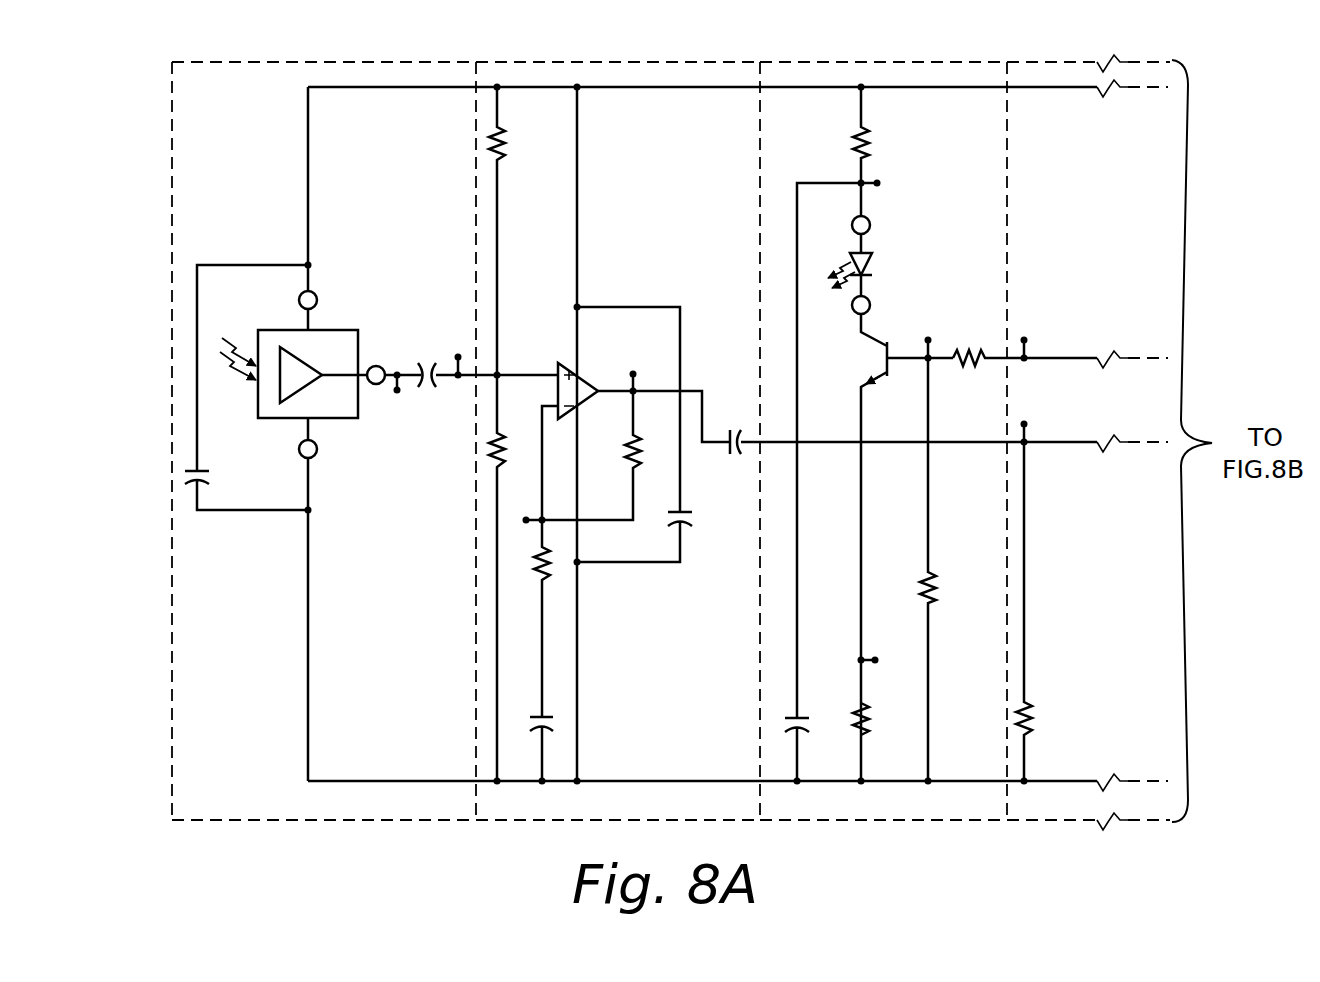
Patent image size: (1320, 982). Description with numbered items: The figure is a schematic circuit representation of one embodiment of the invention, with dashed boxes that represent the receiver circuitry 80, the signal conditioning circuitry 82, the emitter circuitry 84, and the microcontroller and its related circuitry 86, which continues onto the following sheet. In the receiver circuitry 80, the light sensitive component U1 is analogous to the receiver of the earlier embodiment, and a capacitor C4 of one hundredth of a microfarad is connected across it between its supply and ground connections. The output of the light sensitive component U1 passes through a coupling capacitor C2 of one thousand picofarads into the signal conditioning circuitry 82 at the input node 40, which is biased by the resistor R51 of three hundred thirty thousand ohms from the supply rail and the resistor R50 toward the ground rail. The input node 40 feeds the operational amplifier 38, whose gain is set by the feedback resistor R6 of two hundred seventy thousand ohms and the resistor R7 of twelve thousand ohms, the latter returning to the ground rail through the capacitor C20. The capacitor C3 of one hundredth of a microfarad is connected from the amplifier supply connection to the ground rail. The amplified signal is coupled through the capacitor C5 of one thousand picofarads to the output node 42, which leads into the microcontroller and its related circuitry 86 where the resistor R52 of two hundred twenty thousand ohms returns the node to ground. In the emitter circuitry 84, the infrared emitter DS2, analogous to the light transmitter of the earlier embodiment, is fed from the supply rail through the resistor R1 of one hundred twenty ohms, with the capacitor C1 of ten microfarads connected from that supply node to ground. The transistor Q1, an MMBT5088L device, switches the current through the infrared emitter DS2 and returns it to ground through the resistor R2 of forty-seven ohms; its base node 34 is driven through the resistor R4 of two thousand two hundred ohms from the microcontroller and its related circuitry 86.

The receiver circuitry 80 is at (224, 74).
The signal conditioning circuitry 82 is at (508, 74).
The emitter circuitry 84 is at (812, 74).
The microcontroller and its related circuitry 86 is at (1052, 72).
The light sensitive component U1 is at (330, 343).
The capacitor C4 is at (209, 480).
The capacitor C2 is at (434, 388).
The resistor R50 is at (490, 457).
The resistor R51 is at (507, 148).
The input node 40 is at (518, 373).
The operational amplifier 38 is at (585, 380).
The resistor R6 is at (629, 445).
The resistor R7 is at (537, 570).
The capacitor C3 is at (690, 522).
The capacitor C5 is at (731, 454).
The capacitor C20 is at (554, 717).
The resistor R1 is at (868, 143).
The infrared emitter DS2 is at (874, 260).
The transistor Q1 is at (884, 352).
The base node 34 is at (908, 357).
The resistor R4 is at (970, 364).
The output node 42 is at (1053, 445).
The capacitor C1 is at (801, 716).
The resistor R2 is at (868, 716).
The resistor R52 is at (1034, 718).